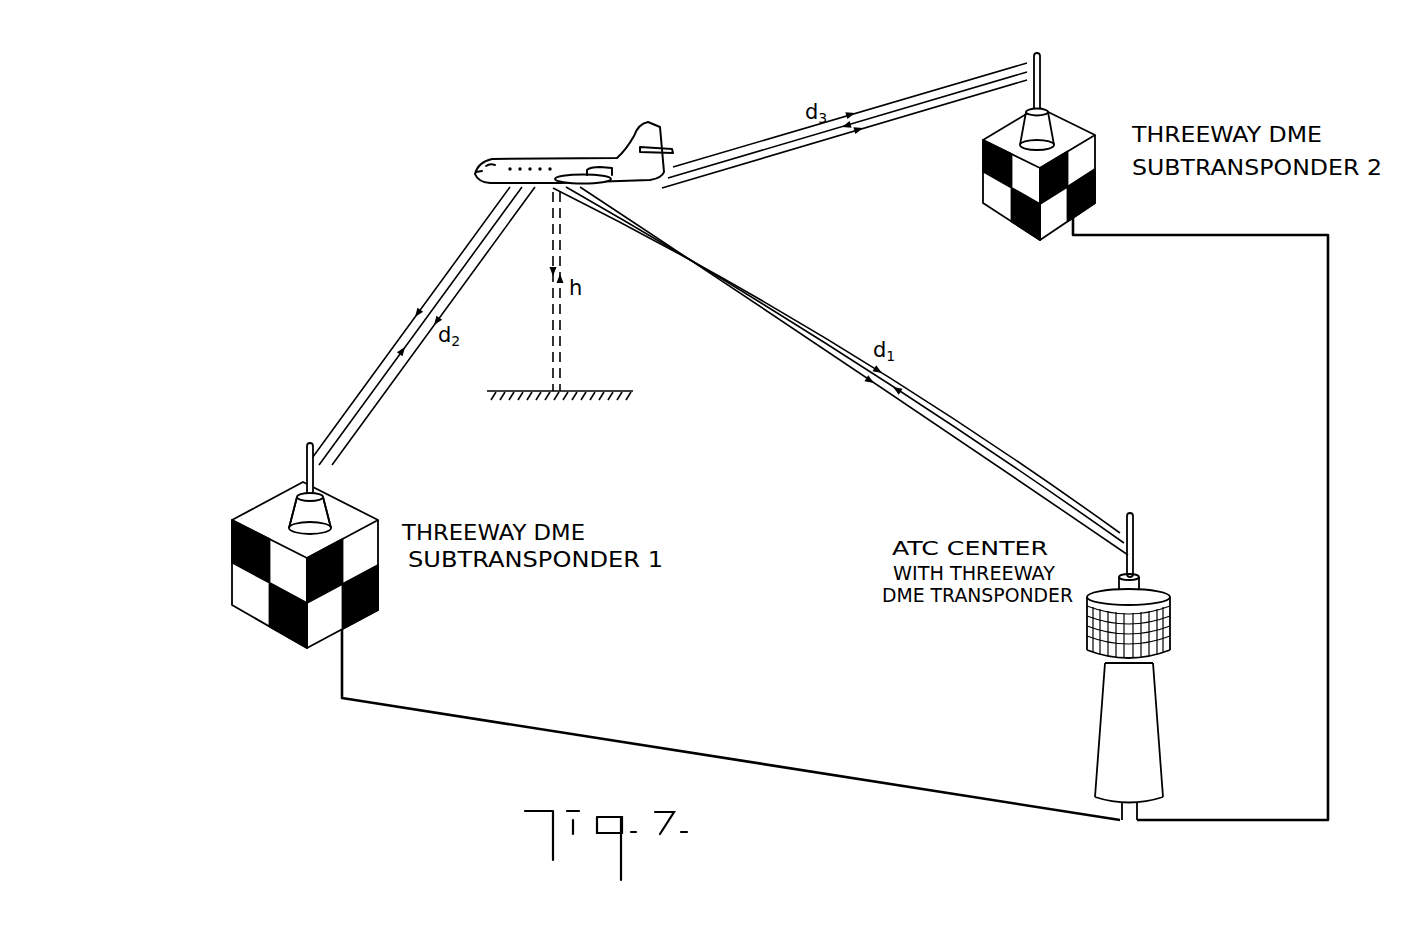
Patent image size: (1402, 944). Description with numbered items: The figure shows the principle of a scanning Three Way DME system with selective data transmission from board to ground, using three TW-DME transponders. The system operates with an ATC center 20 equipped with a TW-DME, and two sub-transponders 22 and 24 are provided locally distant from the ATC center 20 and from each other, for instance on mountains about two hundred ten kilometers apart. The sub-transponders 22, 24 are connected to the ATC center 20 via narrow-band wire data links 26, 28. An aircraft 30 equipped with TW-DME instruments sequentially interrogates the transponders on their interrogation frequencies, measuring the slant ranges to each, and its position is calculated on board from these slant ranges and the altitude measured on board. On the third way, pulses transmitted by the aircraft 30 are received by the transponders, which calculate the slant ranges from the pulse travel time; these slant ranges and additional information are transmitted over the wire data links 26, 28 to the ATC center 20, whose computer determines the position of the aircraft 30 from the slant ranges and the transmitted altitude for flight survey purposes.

The ATC center 20 is at (1170, 615).
The sub-transponder 22 is at (355, 512).
The sub-transponder 24 is at (994, 131).
The narrow-band wire data link 26 is at (635, 742).
The narrow-band wire data link 28 is at (1330, 368).
The aircraft 30 is at (554, 158).